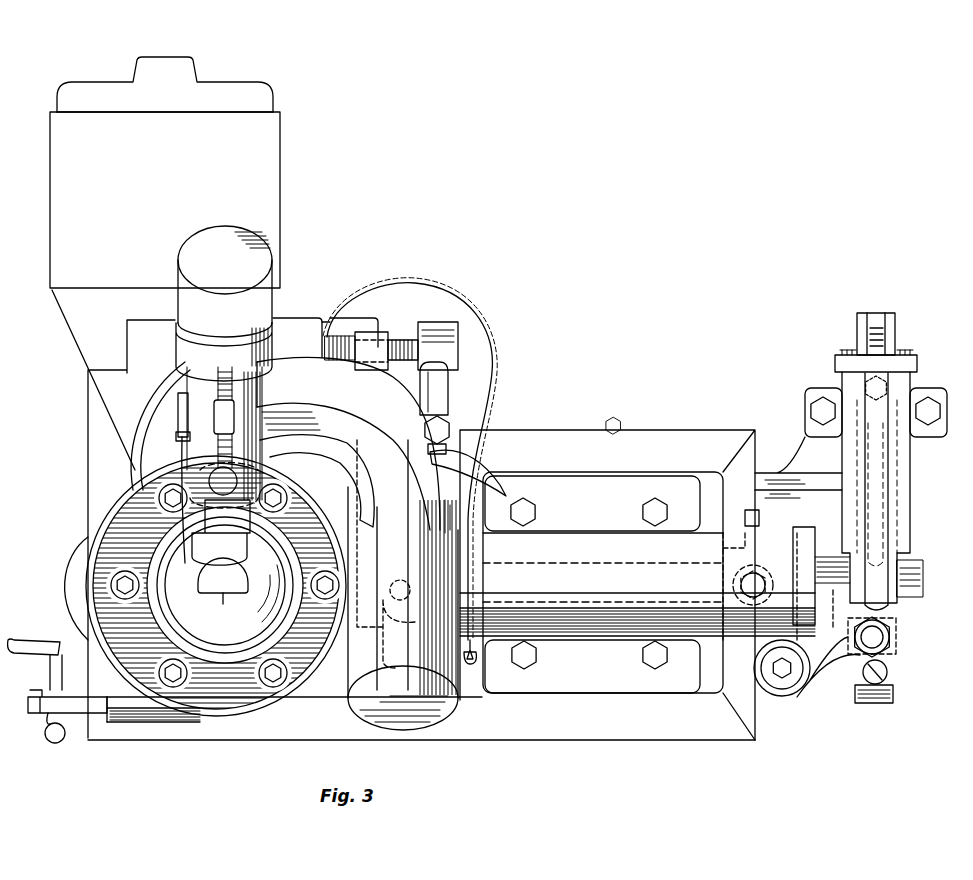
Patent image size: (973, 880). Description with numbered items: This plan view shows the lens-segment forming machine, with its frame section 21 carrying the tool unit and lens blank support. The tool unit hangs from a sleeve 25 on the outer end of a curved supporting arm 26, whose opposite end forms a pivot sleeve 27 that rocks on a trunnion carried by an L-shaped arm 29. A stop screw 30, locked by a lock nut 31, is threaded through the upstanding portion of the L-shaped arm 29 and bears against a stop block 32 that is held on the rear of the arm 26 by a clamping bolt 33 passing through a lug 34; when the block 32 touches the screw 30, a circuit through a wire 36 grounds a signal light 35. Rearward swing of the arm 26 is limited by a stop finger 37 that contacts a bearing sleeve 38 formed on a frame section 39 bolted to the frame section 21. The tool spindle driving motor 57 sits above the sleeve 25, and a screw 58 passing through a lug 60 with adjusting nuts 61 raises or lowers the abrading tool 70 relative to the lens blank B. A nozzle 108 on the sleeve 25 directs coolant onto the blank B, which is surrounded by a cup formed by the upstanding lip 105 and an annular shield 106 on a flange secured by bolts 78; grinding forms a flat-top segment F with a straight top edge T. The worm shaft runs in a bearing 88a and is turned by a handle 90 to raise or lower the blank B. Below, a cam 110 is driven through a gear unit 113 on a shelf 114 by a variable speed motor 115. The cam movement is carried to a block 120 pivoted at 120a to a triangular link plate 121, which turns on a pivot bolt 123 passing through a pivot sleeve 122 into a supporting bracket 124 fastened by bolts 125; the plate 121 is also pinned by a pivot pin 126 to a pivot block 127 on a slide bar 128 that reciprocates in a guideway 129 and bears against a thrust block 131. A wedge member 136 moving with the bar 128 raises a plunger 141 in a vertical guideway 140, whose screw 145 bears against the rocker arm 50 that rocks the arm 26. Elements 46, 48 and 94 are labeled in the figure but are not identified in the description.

The variable speed motor 115 is at (172, 202).
The tool spindle driving motor 57 is at (233, 272).
The screw 58 is at (211, 370).
The supporting arm 26 is at (305, 380).
The L-shaped arm 29 is at (347, 443).
The stop screw 30 is at (398, 342).
The lock nut 31 is at (346, 366).
The stop block 32 is at (458, 342).
The clamping bolt 33 is at (450, 434).
The lug 34 is at (435, 405).
The wire 36 is at (478, 388).
The stop finger 37 is at (476, 482).
The signal light 35 is at (477, 658).
The pivot sleeve 27 is at (408, 540).
The passage 48 is at (386, 620).
The frame section 21 is at (331, 692).
The bearing 88a is at (118, 740).
The handle 90 is at (33, 640).
The upstanding lip 105 is at (132, 664).
The annular shield 106 is at (110, 528).
The cam 110 is at (80, 566).
The shelf 114 is at (97, 486).
The gear unit 113 is at (152, 430).
The nozzle 108 is at (180, 470).
The sleeve 25 is at (178, 404).
The adjusting nuts 61 is at (218, 404).
The lug 60 is at (214, 422).
The abrading tool 70 is at (210, 556).
The bore ring 94 is at (195, 646).
The bolts 78 is at (263, 676).
The lens blank B is at (197, 619).
The top edge T is at (224, 608).
The flat-top segment F is at (240, 577).
The bearing sleeve 38 is at (559, 536).
The frame section 39 is at (619, 485).
The block 120 is at (760, 574).
The pivot 120a is at (732, 585).
The bolts 125 is at (759, 519).
The supporting bracket 124 is at (787, 466).
The connecting rod 46 is at (816, 542).
The rocker arm 50 is at (888, 518).
The guideway 129 is at (895, 484).
The angular guideway 140 is at (905, 440).
The plunger 141 is at (903, 377).
The screw 145 is at (864, 389).
The slide bar 128 is at (858, 329).
The wedge member 136 is at (877, 320).
The pivot block 127 is at (895, 634).
The pivot pin 126 is at (898, 655).
The thrust block 131 is at (888, 676).
The link plate 121 is at (828, 648).
The pivot sleeve 122 is at (800, 696).
The pivot bolt 123 is at (782, 682).